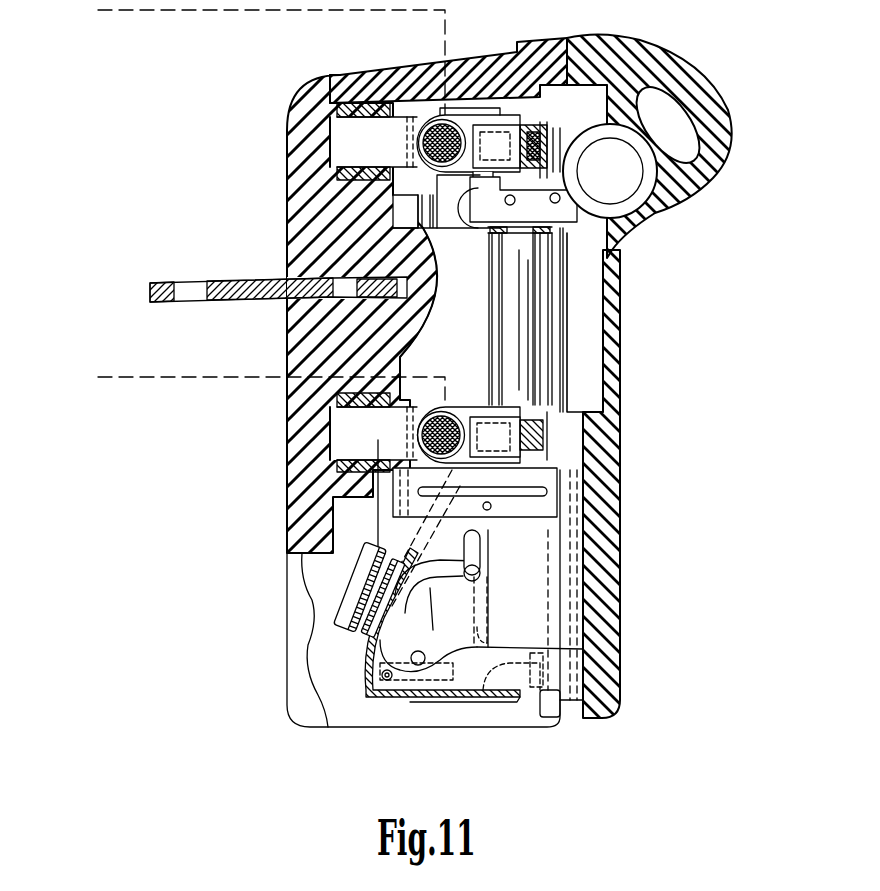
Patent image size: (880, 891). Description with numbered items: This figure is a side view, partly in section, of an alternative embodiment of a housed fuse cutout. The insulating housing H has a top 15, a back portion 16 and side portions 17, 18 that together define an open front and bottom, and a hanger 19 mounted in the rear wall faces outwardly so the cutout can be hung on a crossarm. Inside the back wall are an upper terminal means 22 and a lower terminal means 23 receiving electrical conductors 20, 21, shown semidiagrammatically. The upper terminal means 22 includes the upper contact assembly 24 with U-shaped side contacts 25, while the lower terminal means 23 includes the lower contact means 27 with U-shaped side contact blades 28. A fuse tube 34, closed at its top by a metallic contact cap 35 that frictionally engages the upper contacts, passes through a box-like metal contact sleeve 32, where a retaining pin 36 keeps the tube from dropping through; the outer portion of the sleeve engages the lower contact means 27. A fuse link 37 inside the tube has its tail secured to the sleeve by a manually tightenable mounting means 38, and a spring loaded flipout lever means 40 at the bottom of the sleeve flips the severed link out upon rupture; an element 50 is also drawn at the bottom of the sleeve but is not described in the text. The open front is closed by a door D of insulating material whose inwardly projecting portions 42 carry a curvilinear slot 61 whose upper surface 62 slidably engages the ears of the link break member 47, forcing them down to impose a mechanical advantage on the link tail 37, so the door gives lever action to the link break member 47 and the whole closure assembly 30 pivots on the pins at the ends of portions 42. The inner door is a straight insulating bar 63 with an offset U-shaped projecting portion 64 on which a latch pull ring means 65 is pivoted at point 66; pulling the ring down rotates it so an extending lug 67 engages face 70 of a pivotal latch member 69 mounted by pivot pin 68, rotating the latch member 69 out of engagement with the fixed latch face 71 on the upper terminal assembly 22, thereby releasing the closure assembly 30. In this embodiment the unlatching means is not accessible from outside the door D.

The top 15 is at (385, 72).
The back portion 16 is at (287, 215).
The side portion 17 is at (290, 704).
The side portion 18 is at (330, 646).
The hanger 19 is at (233, 296).
The electrical conductor 20 is at (197, 13).
The electrical conductor 21 is at (165, 381).
The upper terminal means 22 is at (467, 98).
The lower terminal means 23 is at (466, 406).
The upper contact assembly 24 is at (468, 229).
The side contacts 25 is at (437, 199).
The lower contact means 27 is at (390, 519).
The side contact blades 28 is at (396, 500).
The closure assembly 30 is at (622, 599).
The contact sleeve 32 is at (530, 538).
The fuse tube 34 is at (500, 297).
The contact cap 35 is at (560, 135).
The retaining pin 36 is at (492, 506).
The fuse link 37 is at (454, 702).
The mounting means 38 is at (350, 584).
The flipout lever means 40 is at (418, 700).
The inwardly projecting portions 42 is at (397, 652).
The link break member 47 is at (530, 683).
The spring 50 is at (477, 700).
The curvilinear slot 61 is at (428, 630).
The upper surface 62 is at (455, 575).
The straight bar 63 is at (567, 372).
The U-shaped projecting portion 64 is at (565, 234).
The latch pull ring means 65 is at (660, 196).
The pivot point 66 is at (560, 197).
The lug 67 is at (523, 199).
The pivot pin 68 is at (520, 242).
The latch member 69 is at (470, 203).
The face 70 is at (530, 185).
The fixed latch face 71 is at (470, 188).
The insulating housing H is at (284, 180).
The door D is at (622, 335).